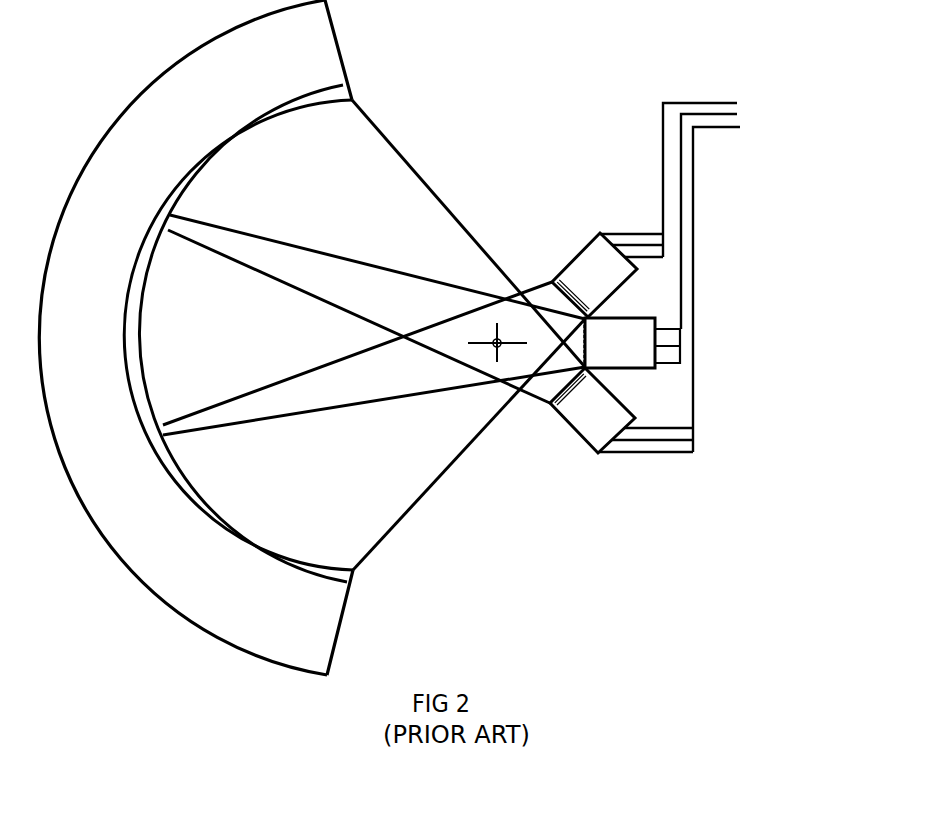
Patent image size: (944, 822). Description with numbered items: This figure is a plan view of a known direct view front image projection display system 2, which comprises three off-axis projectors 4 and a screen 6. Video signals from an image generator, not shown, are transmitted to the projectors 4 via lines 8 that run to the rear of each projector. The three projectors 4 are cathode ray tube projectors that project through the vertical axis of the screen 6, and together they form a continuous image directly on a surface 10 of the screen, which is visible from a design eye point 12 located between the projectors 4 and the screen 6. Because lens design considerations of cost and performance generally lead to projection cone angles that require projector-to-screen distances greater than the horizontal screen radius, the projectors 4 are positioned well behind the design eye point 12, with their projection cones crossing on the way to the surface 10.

The direct view front image projection display system 2 is at (762, 41).
The off-axis projectors 4 is at (594, 285).
The screen 6 is at (167, 62).
The lines 8 is at (693, 200).
The surface 10 is at (257, 133).
The design eye point 12 is at (499, 338).